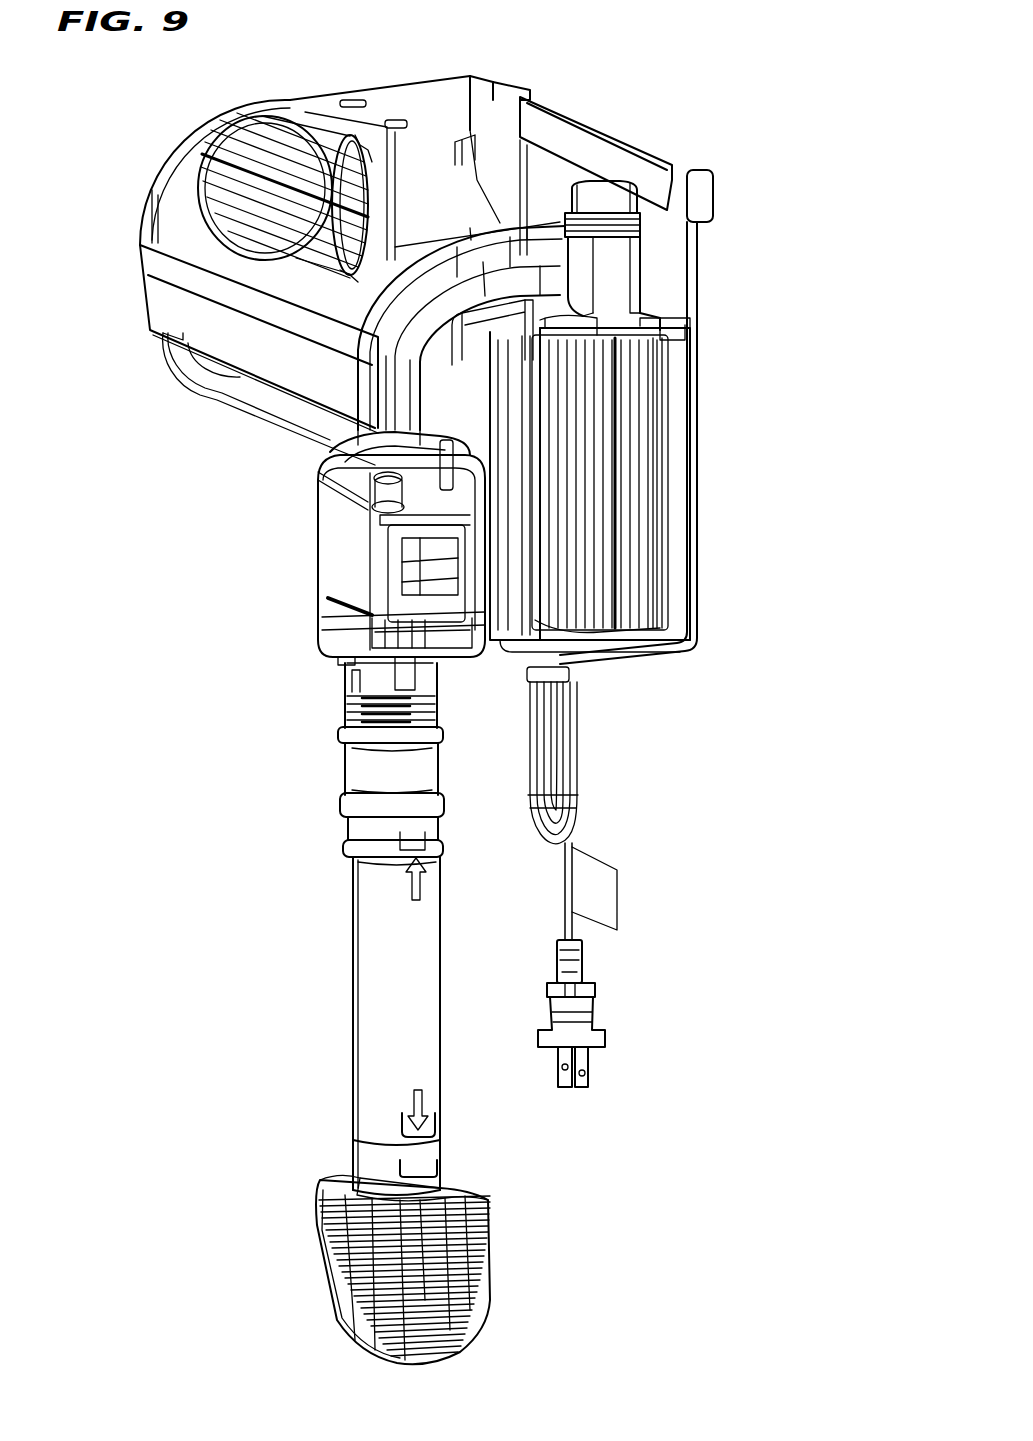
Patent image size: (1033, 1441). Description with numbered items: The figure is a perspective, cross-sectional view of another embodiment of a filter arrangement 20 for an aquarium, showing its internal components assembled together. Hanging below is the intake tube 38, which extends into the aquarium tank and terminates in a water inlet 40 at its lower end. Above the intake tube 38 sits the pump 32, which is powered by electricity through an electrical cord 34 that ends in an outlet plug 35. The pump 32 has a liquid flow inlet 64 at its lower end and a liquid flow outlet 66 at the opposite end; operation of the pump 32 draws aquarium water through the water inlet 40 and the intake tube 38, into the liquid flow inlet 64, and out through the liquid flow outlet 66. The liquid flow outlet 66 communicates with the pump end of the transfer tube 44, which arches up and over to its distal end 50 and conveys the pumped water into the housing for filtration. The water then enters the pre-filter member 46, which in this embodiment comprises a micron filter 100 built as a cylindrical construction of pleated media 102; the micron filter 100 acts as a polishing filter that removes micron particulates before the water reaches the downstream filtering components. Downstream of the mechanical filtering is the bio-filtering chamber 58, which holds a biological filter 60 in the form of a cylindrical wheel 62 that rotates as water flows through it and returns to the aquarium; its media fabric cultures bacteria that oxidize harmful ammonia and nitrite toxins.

The filter arrangement 20 is at (767, 108).
The bio-filtering chamber 58 is at (277, 103).
The biological filter 60 is at (213, 147).
The cylindrical wheel 62 is at (197, 183).
The transfer tube 44 is at (490, 247).
The distal end 50 is at (582, 278).
The pre-filter member 46 is at (672, 397).
The micron filter 100 is at (668, 478).
The pleated media 102 is at (658, 558).
The liquid flow outlet 66 is at (395, 450).
The pump 32 is at (318, 540).
The liquid flow inlet 64 is at (358, 672).
The intake tube 38 is at (350, 990).
The water inlet 40 is at (323, 1273).
The electrical cord 34 is at (562, 763).
The outlet plug 35 is at (598, 1000).